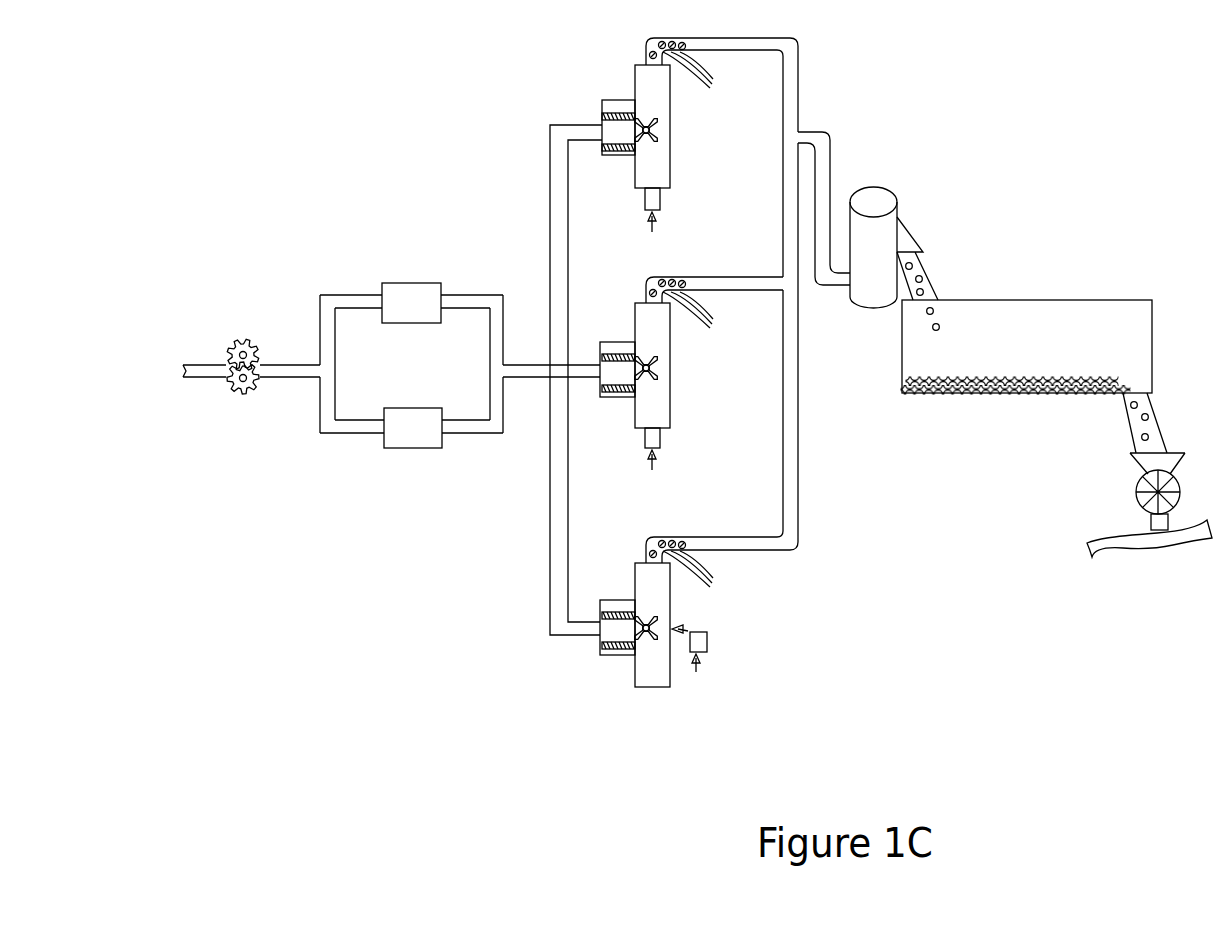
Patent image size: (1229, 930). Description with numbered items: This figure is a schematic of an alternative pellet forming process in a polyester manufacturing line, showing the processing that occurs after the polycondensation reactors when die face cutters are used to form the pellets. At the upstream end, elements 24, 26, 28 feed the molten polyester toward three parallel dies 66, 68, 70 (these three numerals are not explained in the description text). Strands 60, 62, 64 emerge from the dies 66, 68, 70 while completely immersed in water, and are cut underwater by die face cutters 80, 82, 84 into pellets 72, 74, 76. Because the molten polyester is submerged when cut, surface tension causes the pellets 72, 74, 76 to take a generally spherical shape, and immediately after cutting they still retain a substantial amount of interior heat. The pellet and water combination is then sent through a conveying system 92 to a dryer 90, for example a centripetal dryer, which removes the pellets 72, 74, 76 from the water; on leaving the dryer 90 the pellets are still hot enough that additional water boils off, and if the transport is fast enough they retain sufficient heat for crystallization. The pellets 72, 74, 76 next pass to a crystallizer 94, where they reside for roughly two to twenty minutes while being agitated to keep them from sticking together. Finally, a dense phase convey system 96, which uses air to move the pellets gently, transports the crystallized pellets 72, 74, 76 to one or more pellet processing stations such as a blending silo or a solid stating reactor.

The gear pump 24 is at (242, 340).
The filter 26 is at (413, 283).
The filter 28 is at (410, 450).
The strand 60 is at (605, 116).
The strand 62 is at (605, 357).
The strand 64 is at (612, 613).
The die 66 is at (622, 100).
The die 68 is at (620, 342).
The die 70 is at (620, 600).
The pellet 72 is at (700, 76).
The pellet 74 is at (700, 316).
The pellet 76 is at (701, 577).
The die face cutter 80 is at (674, 127).
The die face cutter 82 is at (674, 367).
The die face cutter 84 is at (707, 637).
The dryer 90 is at (885, 188).
The conveying system 92 is at (799, 368).
The crystallizer 94 is at (1013, 300).
The dense phase convey system 96 is at (1140, 557).